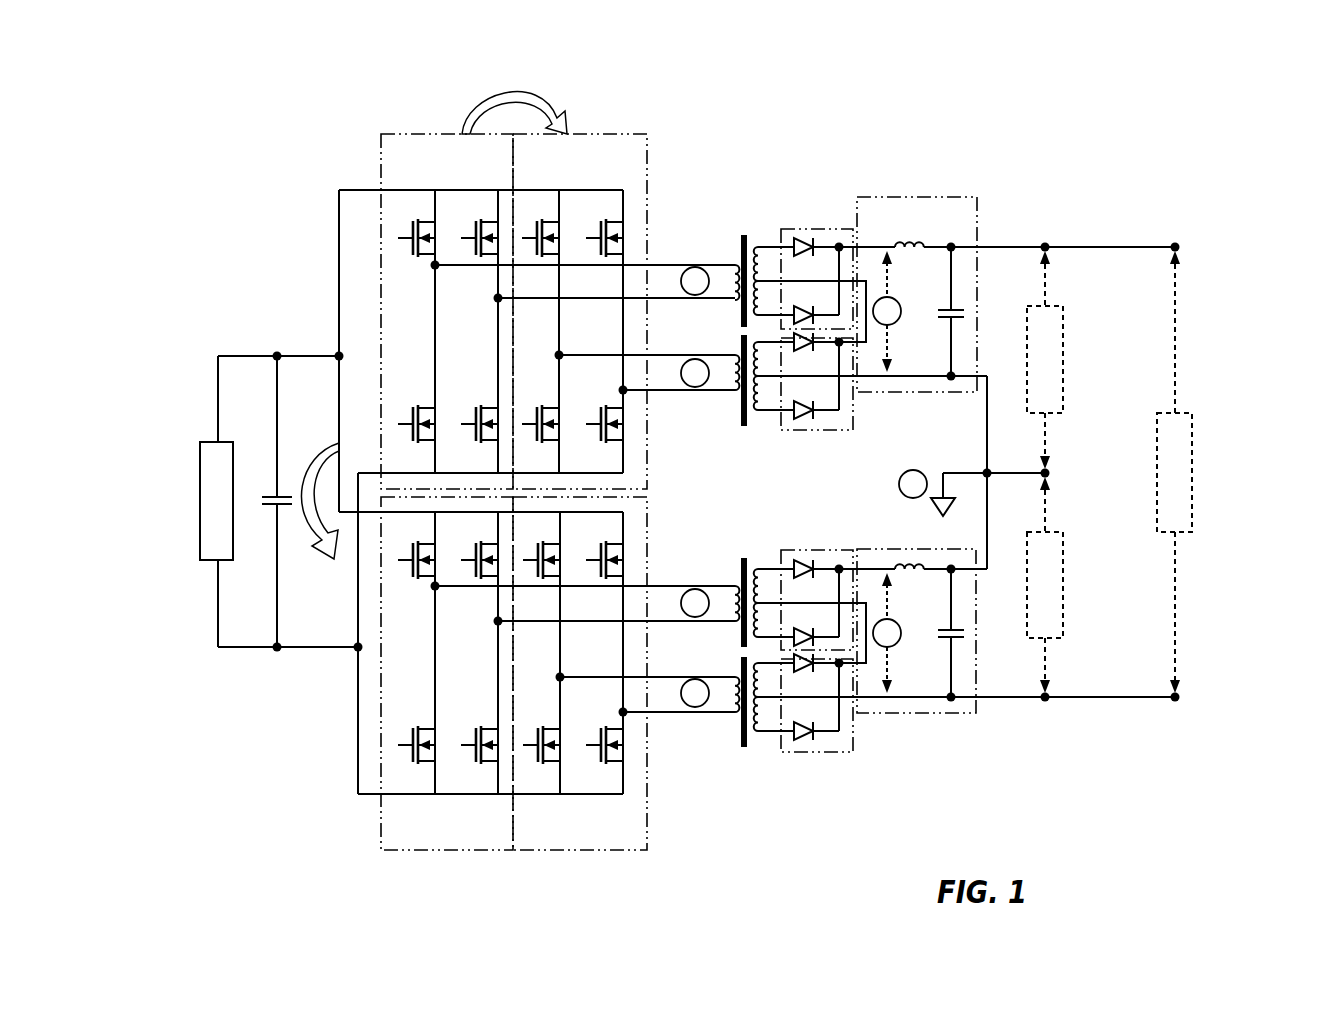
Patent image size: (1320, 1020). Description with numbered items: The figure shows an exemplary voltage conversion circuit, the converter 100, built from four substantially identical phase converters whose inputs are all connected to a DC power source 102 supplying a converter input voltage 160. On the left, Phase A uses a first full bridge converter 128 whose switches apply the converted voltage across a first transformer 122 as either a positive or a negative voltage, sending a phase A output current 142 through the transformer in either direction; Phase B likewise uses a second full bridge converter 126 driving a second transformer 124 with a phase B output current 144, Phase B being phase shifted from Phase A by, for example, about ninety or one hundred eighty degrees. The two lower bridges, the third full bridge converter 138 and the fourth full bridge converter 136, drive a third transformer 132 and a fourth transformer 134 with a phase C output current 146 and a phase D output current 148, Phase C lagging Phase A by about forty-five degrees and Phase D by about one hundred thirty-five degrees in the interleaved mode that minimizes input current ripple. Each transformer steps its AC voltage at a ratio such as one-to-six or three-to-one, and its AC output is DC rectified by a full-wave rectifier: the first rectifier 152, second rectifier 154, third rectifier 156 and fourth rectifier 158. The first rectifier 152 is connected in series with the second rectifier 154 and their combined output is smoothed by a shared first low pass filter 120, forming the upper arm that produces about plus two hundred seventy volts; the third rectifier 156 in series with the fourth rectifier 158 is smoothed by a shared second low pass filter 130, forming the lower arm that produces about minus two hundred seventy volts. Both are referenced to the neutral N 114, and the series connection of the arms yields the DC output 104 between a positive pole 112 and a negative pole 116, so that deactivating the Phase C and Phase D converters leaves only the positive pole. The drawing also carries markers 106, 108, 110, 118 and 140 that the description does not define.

The converter 100 is at (202, 110).
The DC power source 102 is at (200, 460).
The DC output 104 is at (1192, 430).
The phase shift between phase A and phase B bridges 106 is at (490, 100).
The phase shift between upper and lower bridge groups 108 is at (330, 447).
The positive output node 110 is at (1044, 245).
The positive pole 112 is at (1063, 328).
The neutral N 114 is at (1050, 470).
The negative pole 116 is at (1063, 616).
The negative output node 118 is at (1045, 700).
The first low pass filter 120 is at (912, 394).
The first transformer 122 is at (744, 233).
The second transformer 124 is at (744, 428).
The second full bridge converter 126 is at (575, 133).
The first full bridge converter 128 is at (448, 133).
The second low pass filter 130 is at (915, 715).
The third transformer 132 is at (744, 556).
The fourth transformer 134 is at (744, 750).
The fourth full bridge converter 136 is at (565, 852).
The third full bridge converter 138 is at (440, 852).
The first filter output 140 is at (930, 231).
The phase A output current 142 is at (720, 250).
The phase B output current 144 is at (720, 343).
The phase C output current 146 is at (720, 572).
The phase D output current 148 is at (720, 664).
The first rectifier 152 is at (812, 228).
The second rectifier 154 is at (815, 432).
The third rectifier 156 is at (812, 548).
The fourth rectifier 158 is at (815, 755).
The converter input voltage 160 is at (277, 354).